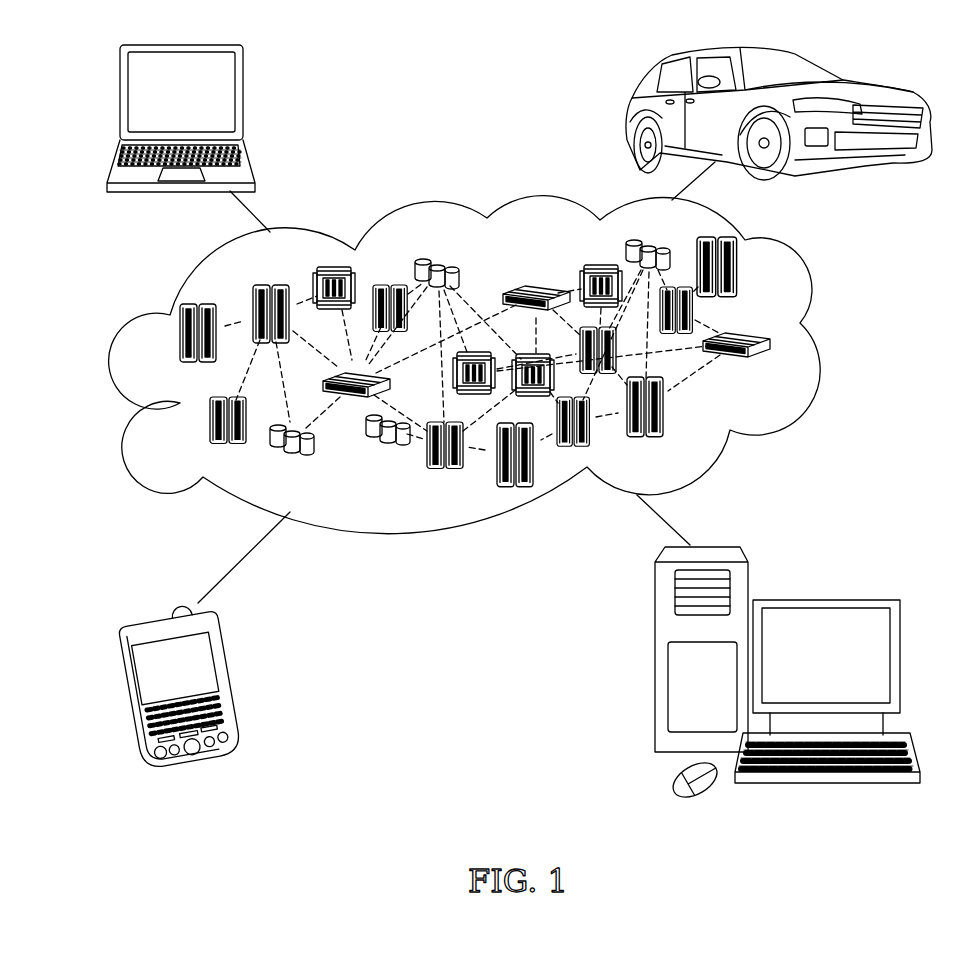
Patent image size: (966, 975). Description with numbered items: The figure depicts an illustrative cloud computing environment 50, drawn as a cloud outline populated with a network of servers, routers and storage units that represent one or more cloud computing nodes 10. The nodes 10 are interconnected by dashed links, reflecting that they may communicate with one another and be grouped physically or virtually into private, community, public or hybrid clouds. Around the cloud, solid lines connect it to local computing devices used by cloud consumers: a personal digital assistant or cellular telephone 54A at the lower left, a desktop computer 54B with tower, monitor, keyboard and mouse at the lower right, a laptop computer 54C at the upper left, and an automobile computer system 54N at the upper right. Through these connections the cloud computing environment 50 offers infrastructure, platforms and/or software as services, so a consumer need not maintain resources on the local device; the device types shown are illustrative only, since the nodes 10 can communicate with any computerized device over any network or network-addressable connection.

The cloud computing nodes 10 is at (774, 370).
The cloud computing environment 50 is at (823, 343).
The personal digital assistant or cellular telephone 54A is at (233, 683).
The desktop computer 54B is at (825, 598).
The laptop computer 54C is at (245, 101).
The automobile computer system 54N is at (630, 112).